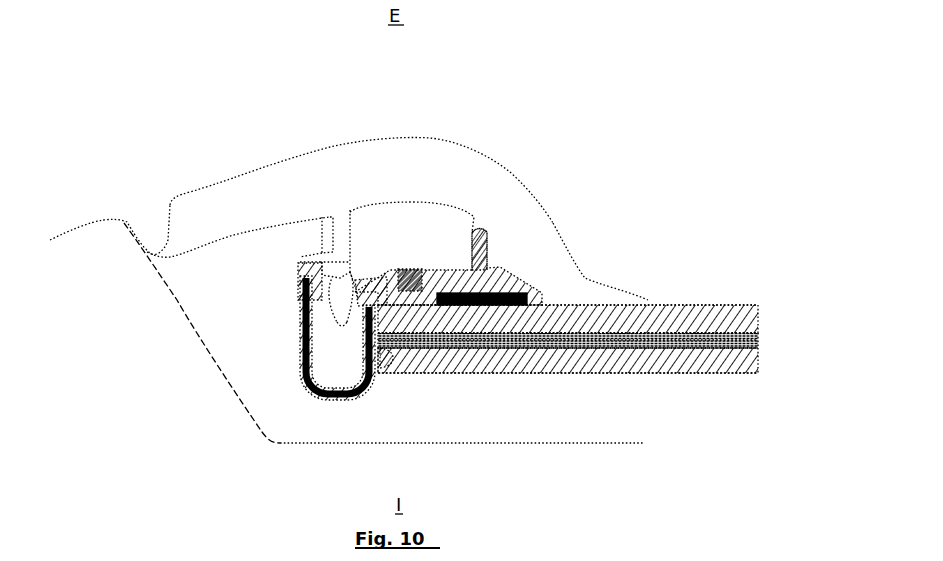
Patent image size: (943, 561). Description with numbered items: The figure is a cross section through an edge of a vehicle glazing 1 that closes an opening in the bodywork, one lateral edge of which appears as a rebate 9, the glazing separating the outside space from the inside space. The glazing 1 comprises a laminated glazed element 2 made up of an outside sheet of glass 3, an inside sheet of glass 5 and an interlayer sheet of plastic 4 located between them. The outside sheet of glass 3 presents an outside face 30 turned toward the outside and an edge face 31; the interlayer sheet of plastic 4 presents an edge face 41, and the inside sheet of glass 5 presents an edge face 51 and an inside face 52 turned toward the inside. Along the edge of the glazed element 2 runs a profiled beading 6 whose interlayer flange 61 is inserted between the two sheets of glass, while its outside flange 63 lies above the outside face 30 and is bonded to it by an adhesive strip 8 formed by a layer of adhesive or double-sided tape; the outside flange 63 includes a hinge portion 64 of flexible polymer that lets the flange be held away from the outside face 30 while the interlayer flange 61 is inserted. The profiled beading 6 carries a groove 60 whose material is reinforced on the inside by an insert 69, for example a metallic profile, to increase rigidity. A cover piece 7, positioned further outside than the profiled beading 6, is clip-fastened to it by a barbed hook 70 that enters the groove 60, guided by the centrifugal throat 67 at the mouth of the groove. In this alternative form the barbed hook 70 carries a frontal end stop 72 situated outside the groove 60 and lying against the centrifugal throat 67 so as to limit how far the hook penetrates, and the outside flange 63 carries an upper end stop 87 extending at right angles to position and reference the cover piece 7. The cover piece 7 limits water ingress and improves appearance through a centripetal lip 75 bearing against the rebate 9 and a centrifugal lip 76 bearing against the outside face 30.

The glazing 1 is at (485, 110).
The laminated glazed element 2 is at (582, 188).
The outside sheet of glass 3 is at (692, 318).
The interlayer sheet of plastic 4 is at (688, 344).
The inside sheet of glass 5 is at (658, 353).
The profiled beading 6 is at (278, 322).
The cover piece 7 is at (498, 181).
The adhesive strip 8 is at (461, 295).
The rebate 9 is at (195, 333).
The outside face 30 is at (670, 312).
The edge face 31 is at (380, 314).
The edge face 41 is at (474, 348).
The edge face 51 is at (383, 354).
The inside face 52 is at (580, 371).
The groove 60 is at (348, 372).
The interlayer flange 61 is at (446, 353).
The outside flange 63 is at (521, 285).
The hinge portion 64 is at (413, 271).
The centrifugal throat 67 is at (301, 277).
The insert 69 is at (348, 398).
The barbed hook 70 is at (344, 222).
The frontal end stop 72 is at (318, 254).
The centripetal lip 75 is at (134, 234).
The centrifugal lip 76 is at (578, 276).
The upper end stop 87 is at (489, 258).